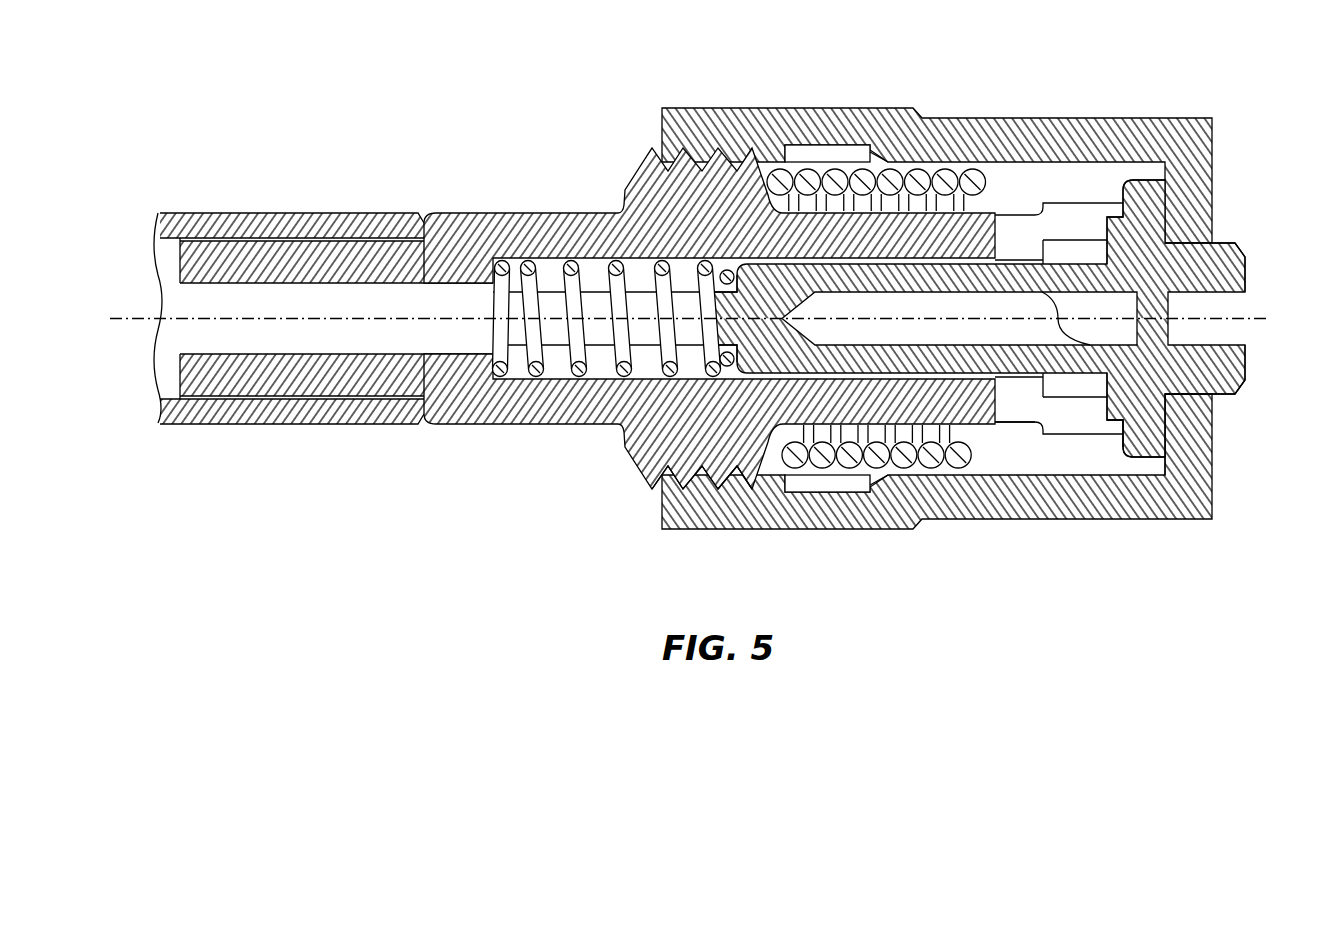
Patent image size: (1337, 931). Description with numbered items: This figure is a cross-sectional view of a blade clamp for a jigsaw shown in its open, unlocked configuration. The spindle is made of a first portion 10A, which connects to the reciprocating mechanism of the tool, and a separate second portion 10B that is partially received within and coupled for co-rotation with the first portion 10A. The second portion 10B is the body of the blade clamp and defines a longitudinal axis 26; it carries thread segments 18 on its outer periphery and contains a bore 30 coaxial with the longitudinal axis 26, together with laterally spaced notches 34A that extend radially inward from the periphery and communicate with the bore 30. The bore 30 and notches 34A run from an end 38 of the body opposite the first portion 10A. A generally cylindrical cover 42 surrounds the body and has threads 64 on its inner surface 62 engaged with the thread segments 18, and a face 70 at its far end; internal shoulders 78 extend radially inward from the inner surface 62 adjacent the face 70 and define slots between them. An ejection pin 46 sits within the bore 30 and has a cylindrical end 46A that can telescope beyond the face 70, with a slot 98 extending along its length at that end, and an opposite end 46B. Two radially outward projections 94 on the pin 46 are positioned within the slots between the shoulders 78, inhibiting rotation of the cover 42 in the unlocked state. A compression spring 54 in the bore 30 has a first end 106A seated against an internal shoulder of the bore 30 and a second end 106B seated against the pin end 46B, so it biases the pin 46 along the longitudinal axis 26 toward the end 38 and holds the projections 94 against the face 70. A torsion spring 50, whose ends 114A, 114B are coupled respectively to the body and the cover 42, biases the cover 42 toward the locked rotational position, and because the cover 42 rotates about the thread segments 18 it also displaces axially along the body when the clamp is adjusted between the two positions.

The first portion 10A is at (240, 212).
The second portion 10B is at (455, 212).
The thread segments 18 is at (690, 495).
The longitudinal axis 26 is at (1270, 301).
The bore 30 is at (595, 270).
The notches 34A is at (1062, 215).
The end 38 is at (1110, 430).
The cover 42 is at (960, 120).
The ejection pin 46 is at (867, 277).
The cylindrical end 46A is at (1190, 375).
The end 46B is at (700, 303).
The torsion spring 50 is at (917, 175).
The compression spring 54 is at (535, 328).
The inner surface 62 is at (1010, 440).
The threads 64 is at (737, 487).
The face 70 is at (1200, 428).
The internal shoulders 78 is at (1108, 185).
The projections 94 is at (1140, 182).
The slot 98 is at (1062, 312).
The first end 106A is at (503, 383).
The second end 106B is at (727, 270).
The end 114A is at (975, 455).
The end 114B is at (793, 167).